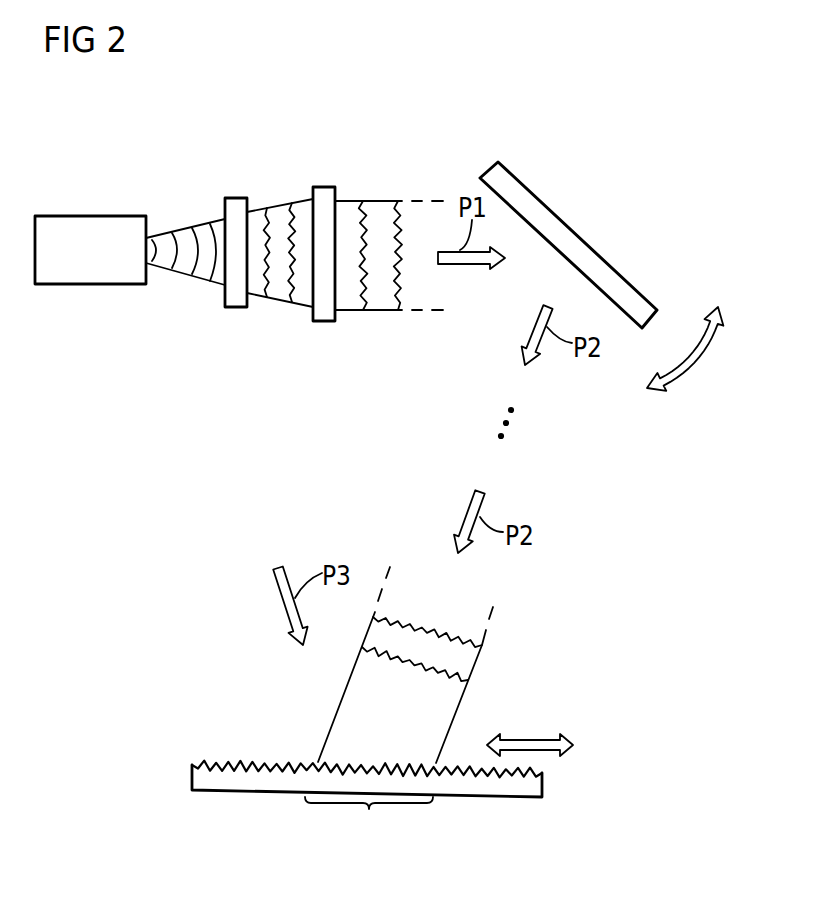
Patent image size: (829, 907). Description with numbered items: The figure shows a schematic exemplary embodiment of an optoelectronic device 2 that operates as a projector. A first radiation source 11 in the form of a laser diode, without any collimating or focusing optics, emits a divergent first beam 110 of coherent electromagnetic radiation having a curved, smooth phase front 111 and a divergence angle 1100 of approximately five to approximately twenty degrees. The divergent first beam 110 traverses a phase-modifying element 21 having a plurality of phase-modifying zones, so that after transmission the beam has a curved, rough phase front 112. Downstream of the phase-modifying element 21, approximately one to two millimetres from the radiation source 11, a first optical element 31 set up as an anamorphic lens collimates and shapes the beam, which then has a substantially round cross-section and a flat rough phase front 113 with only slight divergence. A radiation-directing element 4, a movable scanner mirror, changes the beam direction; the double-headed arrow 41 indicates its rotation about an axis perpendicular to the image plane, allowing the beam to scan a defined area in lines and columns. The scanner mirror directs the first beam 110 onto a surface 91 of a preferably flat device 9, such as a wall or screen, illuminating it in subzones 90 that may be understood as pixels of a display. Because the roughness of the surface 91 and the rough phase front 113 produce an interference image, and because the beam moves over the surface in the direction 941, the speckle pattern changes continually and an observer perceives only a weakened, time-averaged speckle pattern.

The optoelectronic device 2 is at (135, 158).
The first radiation source 11 is at (88, 227).
The divergence angle 1100 is at (197, 228).
The first beam 110 is at (167, 262).
The smooth phase front 111 is at (196, 281).
The phase-modifying element 21 is at (235, 208).
The curved, rough phase front 112 is at (282, 287).
The first optical element 31 is at (320, 198).
The flat rough phase front 113 is at (377, 210).
The radiation-directing element 4 is at (578, 255).
The double-headed arrow 41 is at (693, 363).
The device 9 is at (389, 748).
The surface 91 is at (220, 758).
The subzones 90 is at (369, 819).
The direction 941 is at (525, 742).